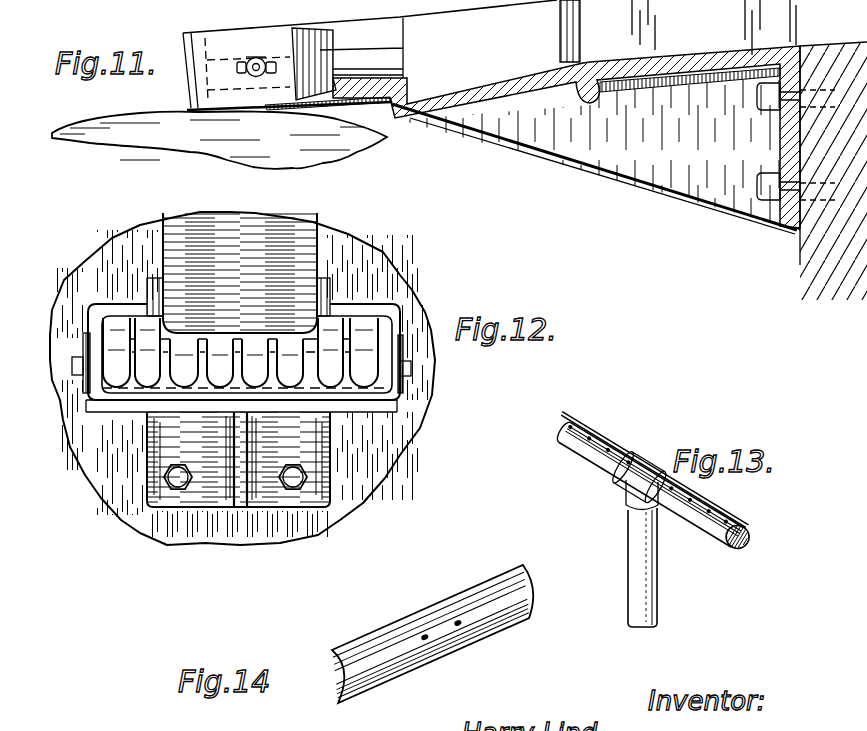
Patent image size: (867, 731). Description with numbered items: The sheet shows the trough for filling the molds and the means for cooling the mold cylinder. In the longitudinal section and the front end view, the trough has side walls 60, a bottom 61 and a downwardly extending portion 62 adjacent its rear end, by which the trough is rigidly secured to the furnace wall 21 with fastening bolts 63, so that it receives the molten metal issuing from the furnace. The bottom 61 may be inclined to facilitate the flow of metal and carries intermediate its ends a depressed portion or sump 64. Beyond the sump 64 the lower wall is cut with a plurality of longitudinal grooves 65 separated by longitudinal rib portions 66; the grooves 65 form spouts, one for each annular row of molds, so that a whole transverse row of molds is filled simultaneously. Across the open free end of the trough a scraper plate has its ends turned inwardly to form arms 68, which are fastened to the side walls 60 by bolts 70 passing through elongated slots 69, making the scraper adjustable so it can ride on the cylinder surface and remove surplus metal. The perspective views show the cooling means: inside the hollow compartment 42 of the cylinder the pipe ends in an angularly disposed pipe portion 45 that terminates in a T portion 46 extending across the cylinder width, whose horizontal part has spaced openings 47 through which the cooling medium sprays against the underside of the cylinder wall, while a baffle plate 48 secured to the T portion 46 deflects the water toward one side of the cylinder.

In FIG. 11, the furnace wall 21 is at (800, 260).
In FIG. 11, the compartment 42 is at (219, 140).
In FIG. 13, the angularly disposed pipe portion 45 is at (637, 600).
In FIG. 13, the T portion 46 is at (722, 548).
In FIG. 13, the spaced openings 47 is at (623, 490).
In FIG. 13, the baffle plate 48 is at (605, 445).
In FIG. 14, the baffle plate 48 is at (460, 603).
In FIG. 11, the side walls 60 is at (436, 50).
In FIG. 12, the side walls 60 is at (148, 288).
In FIG. 11, the bottom 61 is at (413, 118).
In FIG. 11, the downwardly extending portion 62 is at (787, 227).
In FIG. 12, the downwardly extending portion 62 is at (153, 477).
In FIG. 11, the fastening bolts 63 is at (765, 183).
In FIG. 12, the fastening bolts 63 is at (287, 490).
In FIG. 11, the depressed portion or sump 64 is at (505, 95).
In FIG. 12, the longitudinal grooves 65 is at (187, 377).
In FIG. 12, the longitudinal rib portions 66 is at (350, 347).
In FIG. 12, the arms 68 is at (85, 335).
In FIG. 11, the elongated slots 69 is at (274, 73).
In FIG. 11, the bolts 70 is at (253, 57).
In FIG. 12, the bolts 70 is at (416, 372).